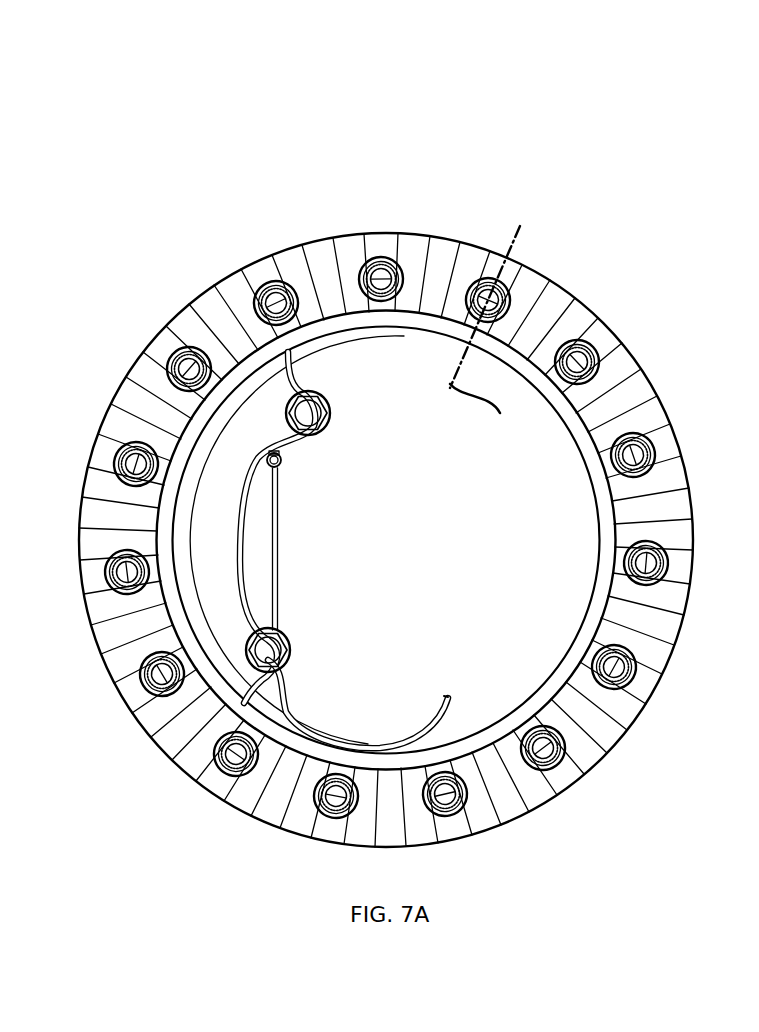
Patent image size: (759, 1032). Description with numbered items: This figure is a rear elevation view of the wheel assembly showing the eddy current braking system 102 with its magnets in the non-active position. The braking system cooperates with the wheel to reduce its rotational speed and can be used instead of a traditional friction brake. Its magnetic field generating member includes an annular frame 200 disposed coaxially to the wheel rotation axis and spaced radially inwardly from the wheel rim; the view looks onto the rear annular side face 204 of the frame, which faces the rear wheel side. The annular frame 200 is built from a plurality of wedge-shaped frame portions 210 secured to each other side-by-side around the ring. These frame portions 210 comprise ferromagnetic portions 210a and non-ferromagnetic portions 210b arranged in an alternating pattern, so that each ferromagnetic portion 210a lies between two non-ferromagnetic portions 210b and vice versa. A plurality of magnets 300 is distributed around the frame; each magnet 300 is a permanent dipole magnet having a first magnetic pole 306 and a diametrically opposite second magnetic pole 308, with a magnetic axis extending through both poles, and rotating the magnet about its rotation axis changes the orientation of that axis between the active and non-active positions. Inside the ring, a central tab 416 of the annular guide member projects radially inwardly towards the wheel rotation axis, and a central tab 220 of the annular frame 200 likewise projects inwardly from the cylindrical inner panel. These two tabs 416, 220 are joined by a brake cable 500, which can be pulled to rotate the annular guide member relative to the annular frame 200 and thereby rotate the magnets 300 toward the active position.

The eddy current braking system 102 is at (114, 178).
The annular frame 200 is at (130, 345).
The rear annular side face 204 is at (240, 288).
The wedge-shaped frame portions 210 is at (490, 770).
The ferromagnetic portions 210a is at (467, 267).
The non-ferromagnetic portions 210b is at (507, 288).
The magnets 300 is at (523, 291).
The first magnetic pole 306 is at (496, 292).
The second magnetic pole 308 is at (483, 307).
The central tab 416 is at (260, 468).
The brake cable 500 is at (277, 566).
The central tab 220 is at (276, 628).